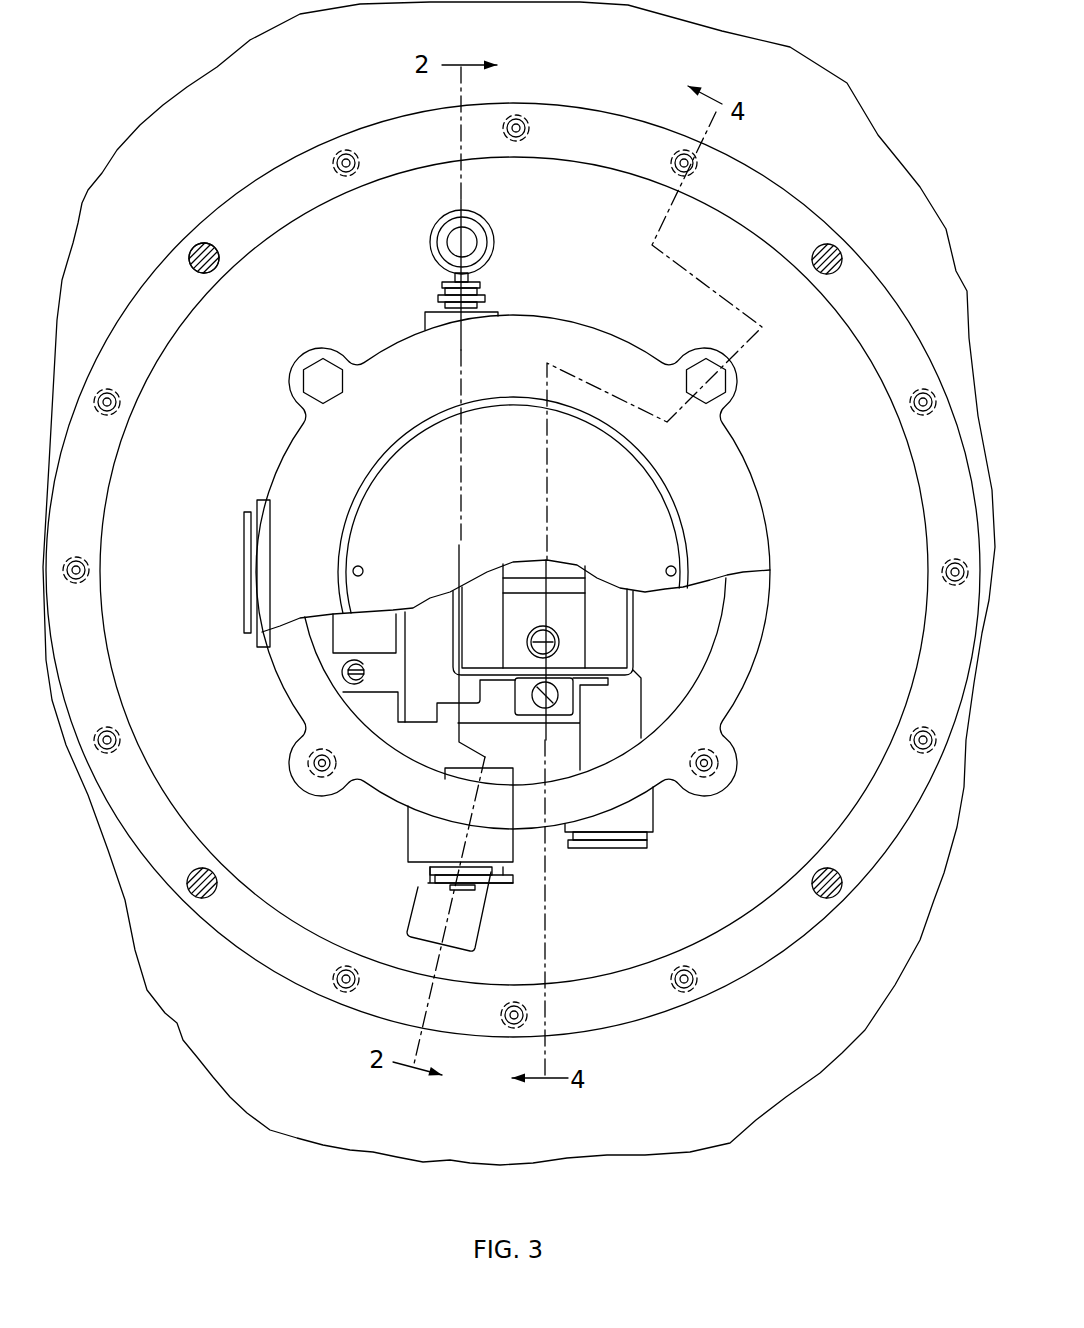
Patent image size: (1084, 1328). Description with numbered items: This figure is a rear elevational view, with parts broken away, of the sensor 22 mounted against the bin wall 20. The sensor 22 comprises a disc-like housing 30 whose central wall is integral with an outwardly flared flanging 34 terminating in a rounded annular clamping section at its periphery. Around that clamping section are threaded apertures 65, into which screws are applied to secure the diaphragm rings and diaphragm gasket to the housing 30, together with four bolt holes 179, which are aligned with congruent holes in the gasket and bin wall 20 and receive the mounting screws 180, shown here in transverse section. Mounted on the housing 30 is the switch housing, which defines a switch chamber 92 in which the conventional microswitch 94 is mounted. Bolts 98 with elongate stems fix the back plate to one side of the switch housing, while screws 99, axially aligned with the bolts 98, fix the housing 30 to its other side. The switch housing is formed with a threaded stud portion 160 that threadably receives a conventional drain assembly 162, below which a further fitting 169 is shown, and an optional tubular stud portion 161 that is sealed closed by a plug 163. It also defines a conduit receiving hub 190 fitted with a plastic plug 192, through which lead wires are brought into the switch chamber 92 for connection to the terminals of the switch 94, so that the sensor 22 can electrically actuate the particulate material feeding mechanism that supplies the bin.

The bin wall 20 is at (733, 57).
The sensor 22 is at (641, 60).
The housing 30 is at (744, 262).
The flanging 34 is at (300, 888).
The apertures 65 is at (346, 150).
The switch chamber 92 is at (677, 645).
The microswitch 94 is at (599, 597).
The bolts 98 is at (328, 372).
The screws 99 is at (322, 778).
The threaded stud portion 160 is at (423, 845).
The tubular stud portion 161 is at (645, 818).
The drain assembly 162 is at (440, 875).
The plug 163 is at (642, 852).
The cable connector 169 is at (469, 922).
The bolt holes 179 is at (214, 264).
The screws 180 is at (195, 240).
The conduit receiving hub 190 is at (261, 497).
The plastic plug 192 is at (244, 538).